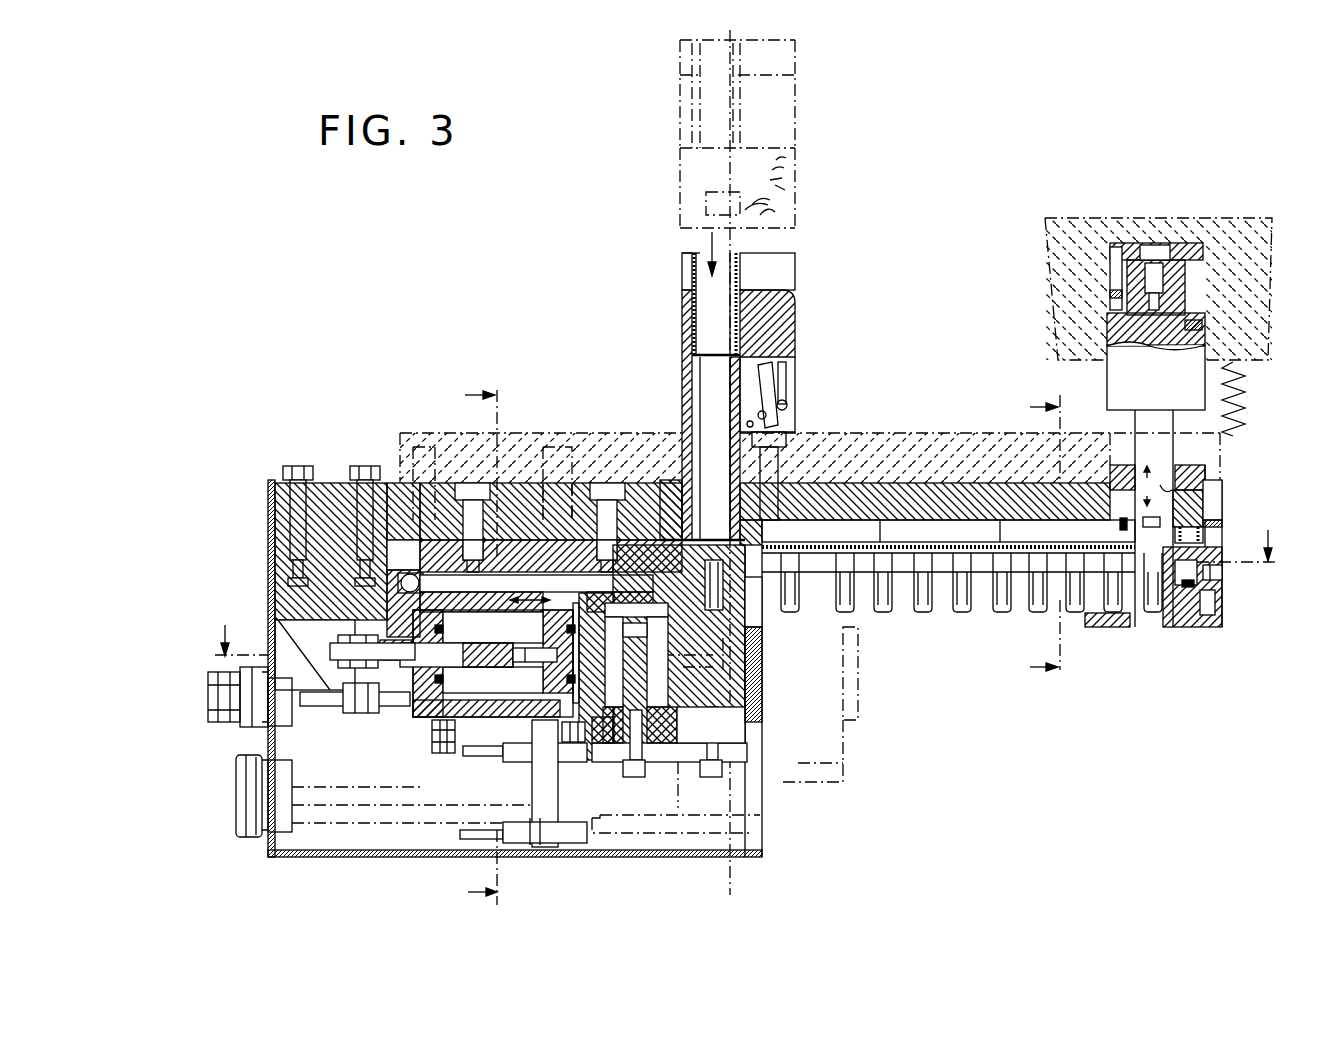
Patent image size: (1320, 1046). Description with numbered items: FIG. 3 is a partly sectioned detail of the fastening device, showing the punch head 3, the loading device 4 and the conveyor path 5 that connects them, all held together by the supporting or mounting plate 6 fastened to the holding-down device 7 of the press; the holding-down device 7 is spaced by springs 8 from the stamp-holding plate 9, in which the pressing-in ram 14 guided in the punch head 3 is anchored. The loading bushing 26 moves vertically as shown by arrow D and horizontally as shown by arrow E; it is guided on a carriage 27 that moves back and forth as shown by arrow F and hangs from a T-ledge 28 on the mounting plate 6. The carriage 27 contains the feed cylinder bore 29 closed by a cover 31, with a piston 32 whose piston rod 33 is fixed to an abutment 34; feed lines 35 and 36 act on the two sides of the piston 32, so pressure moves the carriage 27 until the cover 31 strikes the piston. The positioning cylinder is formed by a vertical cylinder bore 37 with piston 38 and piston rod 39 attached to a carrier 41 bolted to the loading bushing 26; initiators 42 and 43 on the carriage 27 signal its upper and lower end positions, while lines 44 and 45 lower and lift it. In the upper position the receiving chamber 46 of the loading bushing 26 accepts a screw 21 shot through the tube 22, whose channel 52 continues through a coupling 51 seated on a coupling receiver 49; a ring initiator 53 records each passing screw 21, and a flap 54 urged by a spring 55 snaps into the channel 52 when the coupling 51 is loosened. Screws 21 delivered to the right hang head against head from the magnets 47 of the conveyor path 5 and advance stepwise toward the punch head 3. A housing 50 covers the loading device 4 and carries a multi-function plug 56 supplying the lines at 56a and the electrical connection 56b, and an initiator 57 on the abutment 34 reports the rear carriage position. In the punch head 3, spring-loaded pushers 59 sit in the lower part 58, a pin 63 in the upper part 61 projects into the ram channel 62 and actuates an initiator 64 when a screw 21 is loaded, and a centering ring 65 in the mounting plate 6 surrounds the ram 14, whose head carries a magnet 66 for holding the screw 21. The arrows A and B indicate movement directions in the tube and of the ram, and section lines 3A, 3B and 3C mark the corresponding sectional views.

The punch head 3 is at (1153, 775).
The loading device 4 is at (246, 858).
The conveyor path 5 is at (922, 773).
The supporting or mounting plate 6 is at (320, 497).
The holding-down device 7 is at (512, 445).
The springs 8 is at (1245, 398).
The stamp-holding plate 9 is at (1258, 280).
The pressing-in ram 14 is at (1140, 431).
The screw 21 is at (720, 570).
The tube 22 is at (690, 342).
The loading bushing 26 is at (758, 655).
The carriage 27 is at (588, 540).
The T-slot or T-ledge 28 is at (548, 545).
The cylinder bore 29 is at (482, 640).
The cover 31 is at (441, 682).
The piston 32 is at (560, 688).
The piston rod 33 is at (395, 668).
The abutment 34 is at (290, 605).
The feed line 35 is at (455, 803).
The feed line 36 is at (420, 785).
The vertical cylinder bore 37 is at (537, 728).
The piston 38 is at (580, 645).
The piston rod 39 is at (660, 763).
The loading-bushing carrier 41 is at (696, 763).
The initiator 42 is at (535, 774).
The initiator 43 is at (565, 842).
The hydraulic or pneumatic line 44 is at (625, 548).
The hydraulic or pneumatic line 45 is at (582, 778).
The receiving chamber 46 is at (756, 635).
The magnets 47 is at (818, 530).
The coupling receiver 49 is at (770, 432).
The housing 50 is at (270, 520).
The coupling 51 is at (785, 108).
The channel 52 is at (705, 308).
The ring initiator 53 is at (788, 60).
The lever 54 is at (758, 200).
The spring 55 is at (784, 175).
The multi-function plug 56 is at (196, 812).
The hydraulic or pneumatic feed 56a is at (248, 818).
The electrical connection 56b is at (216, 722).
The initiator 57 is at (338, 706).
The punch-head lower part 58 is at (1212, 615).
The spring-loaded pushers 59 is at (1193, 588).
The upper part of the punch head 61 is at (1222, 500).
The ram channel 62 is at (1218, 578).
The pin 63 is at (1203, 530).
The initiator 64 is at (1222, 524).
The centering ring 65 is at (1205, 480).
The magnet 66 is at (1142, 595).
The direction A is at (705, 250).
The direction B is at (1158, 478).
The vertical double-ended arrow D is at (760, 680).
The horizontal double-ended arrow E is at (679, 652).
The double-ended arrow F is at (538, 614).
The sectional view 3A is at (744, 590).
The sectional view 3B is at (461, 644).
The sectional view 3C is at (1025, 537).